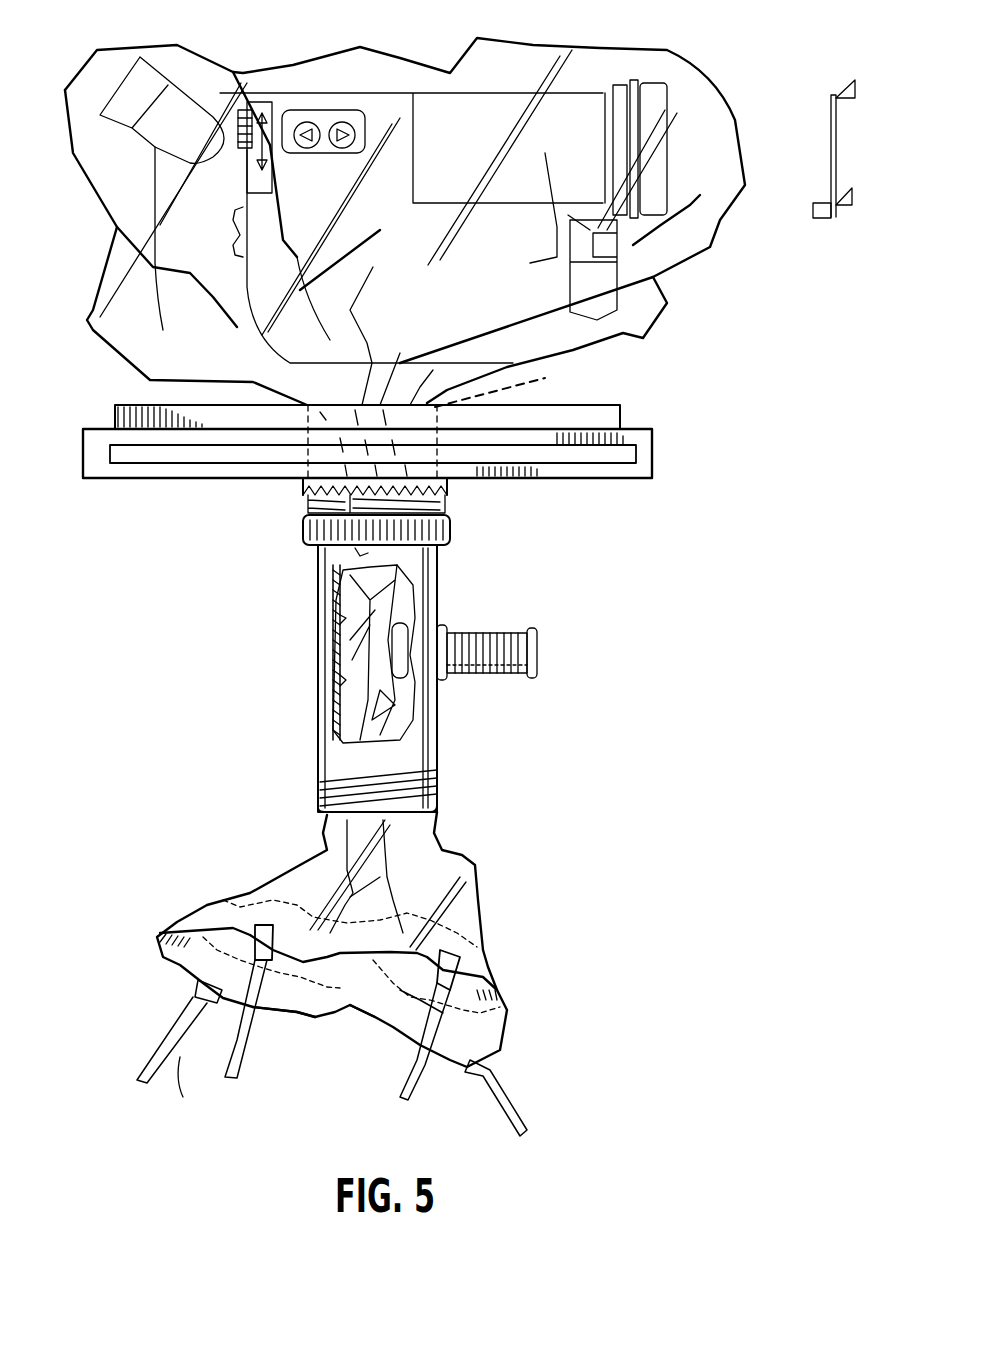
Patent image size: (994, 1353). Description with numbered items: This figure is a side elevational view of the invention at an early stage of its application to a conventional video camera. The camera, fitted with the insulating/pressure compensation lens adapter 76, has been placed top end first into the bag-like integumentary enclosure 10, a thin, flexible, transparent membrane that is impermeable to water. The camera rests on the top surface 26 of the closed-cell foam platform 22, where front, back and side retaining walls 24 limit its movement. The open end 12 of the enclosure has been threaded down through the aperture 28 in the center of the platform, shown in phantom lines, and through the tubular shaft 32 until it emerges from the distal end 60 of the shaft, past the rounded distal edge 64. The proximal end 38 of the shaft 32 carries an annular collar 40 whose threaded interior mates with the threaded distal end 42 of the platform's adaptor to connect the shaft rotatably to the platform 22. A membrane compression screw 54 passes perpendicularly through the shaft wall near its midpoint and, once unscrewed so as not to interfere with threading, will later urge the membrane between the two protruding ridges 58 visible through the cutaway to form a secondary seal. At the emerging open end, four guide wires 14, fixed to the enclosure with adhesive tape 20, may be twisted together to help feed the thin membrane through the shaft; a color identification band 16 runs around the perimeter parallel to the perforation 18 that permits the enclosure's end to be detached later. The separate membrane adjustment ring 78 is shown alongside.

The integumentary enclosure 10 is at (718, 228).
The opening 12 is at (372, 992).
The guide wires 14 is at (183, 1097).
The color identification band 16 is at (296, 1010).
The perforation 18 is at (407, 997).
The adhesive tape 20 is at (207, 980).
The platform 22 is at (653, 460).
The retaining walls 24 is at (605, 405).
The top surface 26 is at (648, 424).
The aperture 28 is at (508, 383).
The shaft 32 is at (437, 720).
The proximal end 38 is at (437, 570).
The annular collar 40 is at (450, 530).
The distal end 42 is at (450, 508).
The membrane compression screw 54 is at (537, 650).
The protruding ridges 58 is at (335, 680).
The distal end 60 is at (437, 775).
The distal edge 64 is at (318, 813).
The insulating/pressure compensation lens adapter 76 is at (668, 115).
The membrane adjustment ring 78 is at (835, 122).